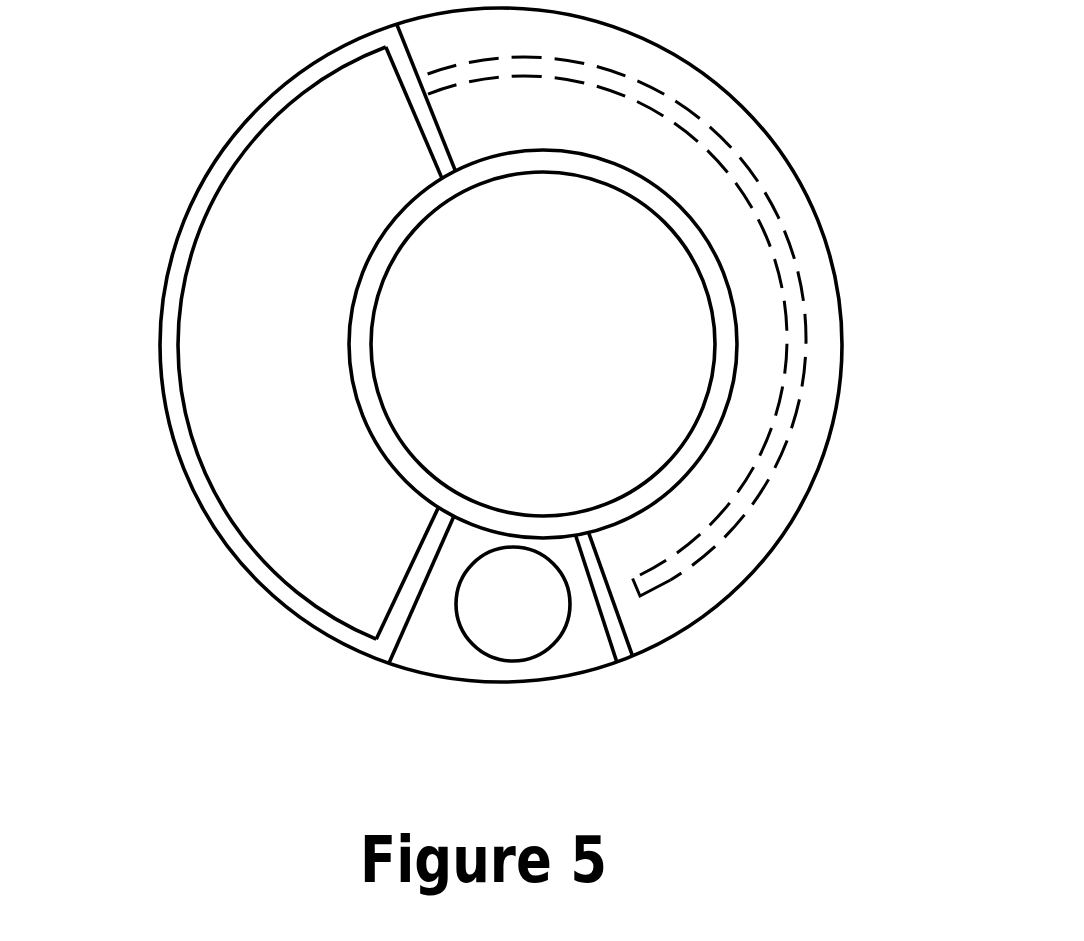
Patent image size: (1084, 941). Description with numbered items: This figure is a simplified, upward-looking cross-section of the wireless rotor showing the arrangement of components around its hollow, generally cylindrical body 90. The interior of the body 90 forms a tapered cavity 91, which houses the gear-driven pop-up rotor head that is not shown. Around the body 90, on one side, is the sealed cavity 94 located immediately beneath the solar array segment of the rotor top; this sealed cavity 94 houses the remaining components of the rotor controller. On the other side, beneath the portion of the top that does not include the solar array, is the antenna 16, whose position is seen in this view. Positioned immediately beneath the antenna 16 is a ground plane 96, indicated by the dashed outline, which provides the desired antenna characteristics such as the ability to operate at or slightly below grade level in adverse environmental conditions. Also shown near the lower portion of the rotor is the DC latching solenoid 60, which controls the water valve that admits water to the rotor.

The antenna 16 is at (797, 262).
The sealed cavity 94 is at (225, 373).
The body 90 is at (373, 302).
The tapered cavity 91 is at (543, 344).
The ground plane 96 is at (748, 540).
The DC latching solenoid 60 is at (547, 643).